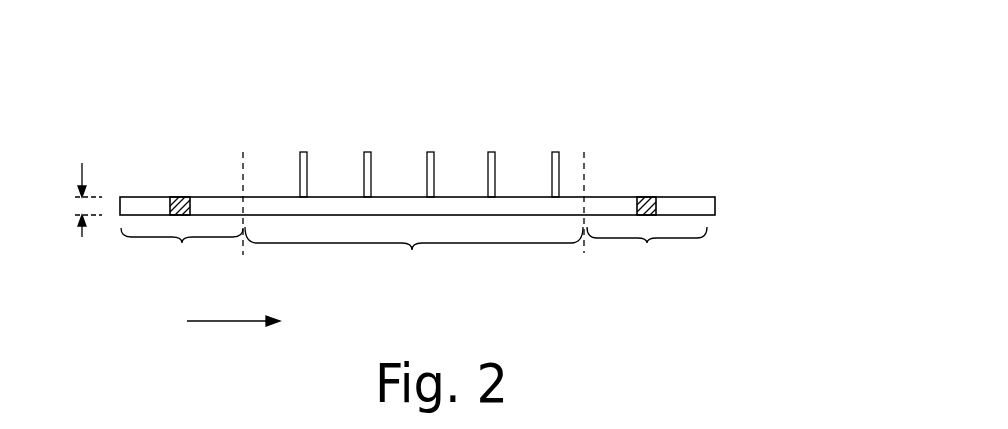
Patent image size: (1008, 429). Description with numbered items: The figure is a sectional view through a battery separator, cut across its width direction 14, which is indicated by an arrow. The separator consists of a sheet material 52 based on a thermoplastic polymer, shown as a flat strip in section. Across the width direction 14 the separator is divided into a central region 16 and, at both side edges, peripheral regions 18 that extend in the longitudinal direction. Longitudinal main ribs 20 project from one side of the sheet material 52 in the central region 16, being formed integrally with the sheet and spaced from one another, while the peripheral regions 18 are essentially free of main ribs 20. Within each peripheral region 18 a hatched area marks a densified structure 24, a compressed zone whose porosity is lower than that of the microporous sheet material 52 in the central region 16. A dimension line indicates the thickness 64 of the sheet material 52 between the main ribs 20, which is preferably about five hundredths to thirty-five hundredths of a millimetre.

The sheet material 52 is at (717, 204).
The densified structure 24 is at (178, 197).
The longitudinal main ribs 20 is at (307, 157).
The peripheral regions 18 is at (414, 215).
The central region 16 is at (414, 255).
The width direction 14 is at (217, 322).
The thickness 64 is at (84, 186).